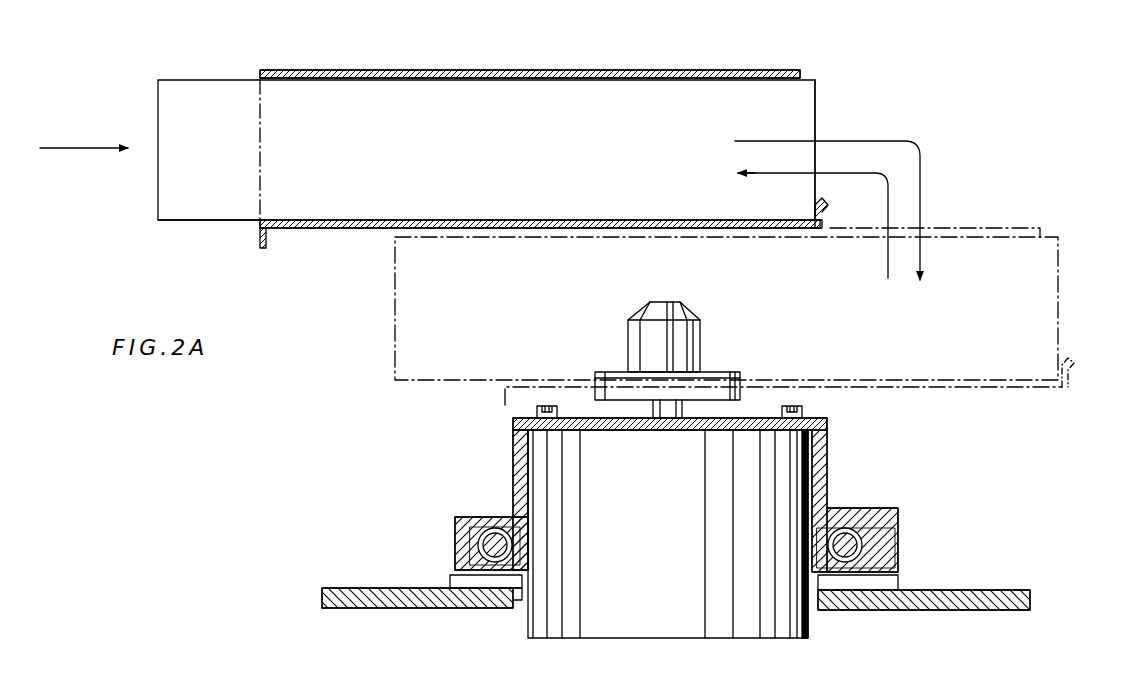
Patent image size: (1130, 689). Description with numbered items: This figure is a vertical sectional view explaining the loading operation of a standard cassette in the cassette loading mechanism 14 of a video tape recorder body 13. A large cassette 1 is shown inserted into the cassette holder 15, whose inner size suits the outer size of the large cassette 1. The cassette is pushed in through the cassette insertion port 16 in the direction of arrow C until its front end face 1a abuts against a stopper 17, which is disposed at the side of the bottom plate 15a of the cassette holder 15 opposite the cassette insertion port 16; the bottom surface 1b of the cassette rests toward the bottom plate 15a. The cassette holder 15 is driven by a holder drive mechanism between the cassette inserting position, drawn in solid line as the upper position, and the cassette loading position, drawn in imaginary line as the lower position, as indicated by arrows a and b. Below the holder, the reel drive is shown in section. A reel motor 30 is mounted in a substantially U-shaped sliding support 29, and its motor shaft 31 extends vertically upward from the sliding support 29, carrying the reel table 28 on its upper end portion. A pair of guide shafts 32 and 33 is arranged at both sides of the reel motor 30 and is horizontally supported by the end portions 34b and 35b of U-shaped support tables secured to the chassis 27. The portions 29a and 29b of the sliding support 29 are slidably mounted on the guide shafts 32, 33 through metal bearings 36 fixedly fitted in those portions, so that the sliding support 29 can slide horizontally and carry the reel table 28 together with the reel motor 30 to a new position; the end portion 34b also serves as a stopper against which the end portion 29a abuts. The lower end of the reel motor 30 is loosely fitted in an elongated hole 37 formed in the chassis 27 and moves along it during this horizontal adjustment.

The large cassette 1 is at (680, 70).
The front end face 1a is at (815, 115).
The bottom surface 1b is at (205, 222).
The video tape recorder body 13 is at (965, 540).
The cassette loading mechanism 14 is at (925, 128).
The cassette holder 15 is at (350, 70).
The bottom plate 15a is at (330, 228).
The cassette insertion port 16 is at (252, 70).
The stopper 17 is at (826, 208).
The chassis 27 is at (392, 608).
The reel table 28 is at (645, 345).
The sliding support 29 is at (827, 430).
The portion of the sliding support 29a is at (455, 545).
The portion of the sliding support 29b is at (898, 520).
The reel motor 30 is at (597, 628).
The motor shaft 31 is at (668, 405).
The guide shaft 32 is at (495, 535).
The guide shaft 33 is at (845, 535).
The end portion of the support table 34b is at (450, 580).
The end portion of the support table 35b is at (898, 582).
The metal bearing 36 is at (492, 555).
The elongated hole 37 is at (518, 605).
The arrow a is at (920, 170).
The arrow b is at (888, 252).
The arrow c C is at (80, 148).